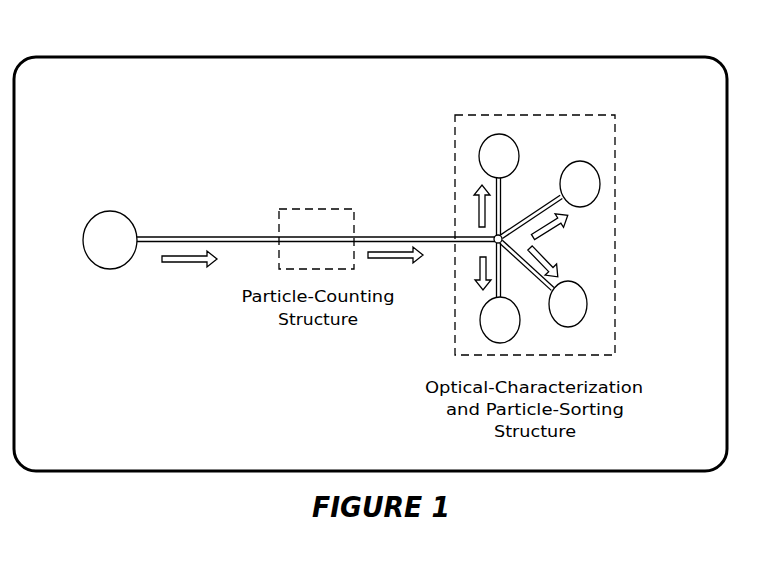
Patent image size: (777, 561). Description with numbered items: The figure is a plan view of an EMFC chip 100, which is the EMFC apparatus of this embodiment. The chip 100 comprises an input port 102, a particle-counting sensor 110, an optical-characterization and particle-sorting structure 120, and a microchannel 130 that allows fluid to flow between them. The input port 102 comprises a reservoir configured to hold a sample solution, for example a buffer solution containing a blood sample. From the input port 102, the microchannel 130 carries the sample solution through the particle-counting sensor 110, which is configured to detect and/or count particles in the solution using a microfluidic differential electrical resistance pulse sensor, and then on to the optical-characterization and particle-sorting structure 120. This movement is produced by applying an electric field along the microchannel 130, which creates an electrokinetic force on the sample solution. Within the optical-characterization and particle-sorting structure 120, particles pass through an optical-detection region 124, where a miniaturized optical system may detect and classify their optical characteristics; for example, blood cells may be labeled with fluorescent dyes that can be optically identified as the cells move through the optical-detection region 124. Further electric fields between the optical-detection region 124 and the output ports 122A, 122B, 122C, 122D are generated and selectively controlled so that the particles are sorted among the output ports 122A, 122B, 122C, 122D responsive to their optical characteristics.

The EMFC chip 100 is at (368, 57).
The input port 102 is at (117, 210).
The particle-counting sensor 110 is at (313, 209).
The optical-characterization and particle-sorting structure 120 is at (518, 115).
The output port 122A is at (503, 155).
The output port 122B is at (588, 185).
The output port 122C is at (578, 303).
The output port 122D is at (503, 322).
The optical-detection region 124 is at (495, 236).
The microchannel 130 is at (168, 237).